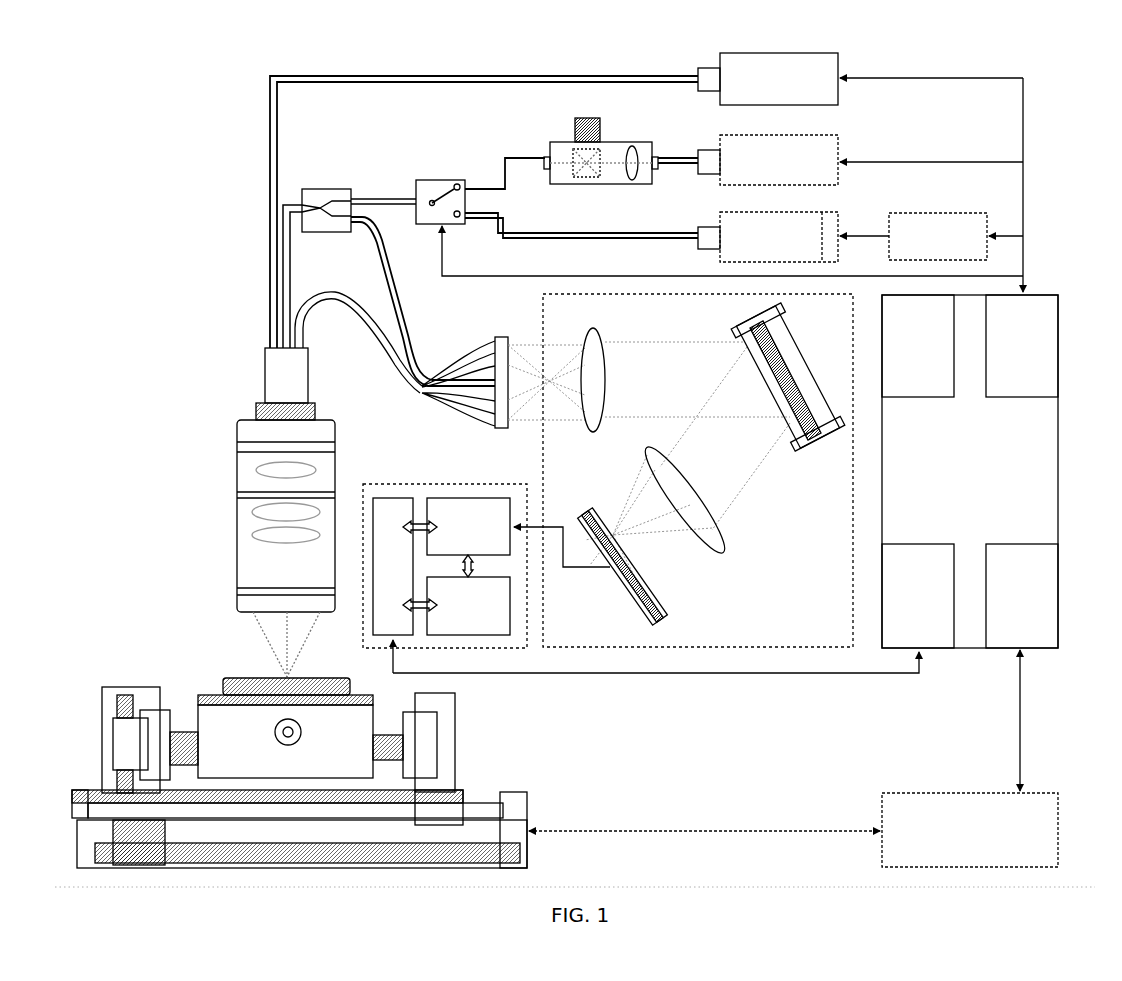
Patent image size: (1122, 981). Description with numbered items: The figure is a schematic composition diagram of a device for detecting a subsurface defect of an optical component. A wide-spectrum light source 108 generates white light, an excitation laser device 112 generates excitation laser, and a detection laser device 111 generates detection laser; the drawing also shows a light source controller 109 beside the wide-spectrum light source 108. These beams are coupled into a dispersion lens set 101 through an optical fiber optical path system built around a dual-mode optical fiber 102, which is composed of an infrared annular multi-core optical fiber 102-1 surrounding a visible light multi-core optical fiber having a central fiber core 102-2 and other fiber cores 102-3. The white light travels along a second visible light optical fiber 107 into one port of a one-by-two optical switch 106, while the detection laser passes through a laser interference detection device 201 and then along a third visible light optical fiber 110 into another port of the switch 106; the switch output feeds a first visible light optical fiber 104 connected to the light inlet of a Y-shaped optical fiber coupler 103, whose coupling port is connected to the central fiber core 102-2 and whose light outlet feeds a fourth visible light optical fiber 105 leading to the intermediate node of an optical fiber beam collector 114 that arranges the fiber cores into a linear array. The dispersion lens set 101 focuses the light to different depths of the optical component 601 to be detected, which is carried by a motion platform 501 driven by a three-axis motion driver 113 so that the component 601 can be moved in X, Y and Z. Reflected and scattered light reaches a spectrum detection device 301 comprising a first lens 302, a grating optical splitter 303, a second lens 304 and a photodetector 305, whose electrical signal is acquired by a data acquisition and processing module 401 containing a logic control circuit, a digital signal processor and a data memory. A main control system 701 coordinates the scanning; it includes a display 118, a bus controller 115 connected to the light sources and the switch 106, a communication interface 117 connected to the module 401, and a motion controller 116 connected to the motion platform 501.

The dispersion lens set 101 is at (240, 492).
The dual-mode optical fiber 102 is at (265, 384).
The infrared annular multi-core optical fiber 102-1 is at (360, 77).
The central fiber core 102-2 is at (290, 292).
The other fiber cores 102-3 is at (320, 303).
The Y-shaped optical fiber coupler 103 is at (313, 200).
The first visible light optical fiber 104 is at (372, 199).
The fourth visible light optical fiber 105 is at (415, 340).
The 1×2 optical switch 106 is at (440, 178).
The second visible light optical fiber 107 is at (584, 235).
The wide-spectrum light source 108 is at (840, 216).
The light source controller 109 is at (924, 216).
The third visible light optical fiber 110 is at (506, 160).
The detection laser device 111 is at (836, 146).
The excitation laser device 112 is at (836, 62).
The three-axis motion driver 113 is at (880, 806).
The optical fiber beam collector 114 is at (505, 338).
The bus controller 115 is at (1052, 340).
The motion controller 116 is at (1055, 601).
The high-speed communication interface 117 is at (897, 556).
The main display unit 118 is at (900, 388).
The laser interference detection device 201 is at (612, 142).
The spectrum detection device 301 is at (722, 652).
The first lens 302 is at (598, 336).
The grating optical splitter 303 is at (792, 350).
The second lens 304 is at (722, 549).
The photodetector 305 is at (662, 612).
The data acquisition and processing module 401 is at (410, 481).
The motion platform 501 is at (510, 809).
The optical component to be detected 601 is at (222, 686).
The main control system 701 is at (1052, 493).